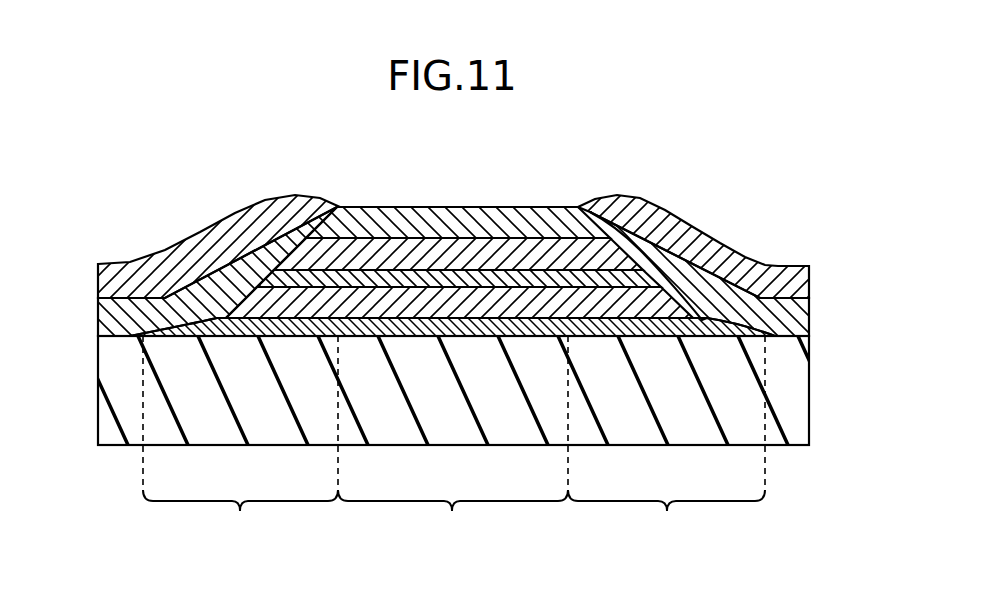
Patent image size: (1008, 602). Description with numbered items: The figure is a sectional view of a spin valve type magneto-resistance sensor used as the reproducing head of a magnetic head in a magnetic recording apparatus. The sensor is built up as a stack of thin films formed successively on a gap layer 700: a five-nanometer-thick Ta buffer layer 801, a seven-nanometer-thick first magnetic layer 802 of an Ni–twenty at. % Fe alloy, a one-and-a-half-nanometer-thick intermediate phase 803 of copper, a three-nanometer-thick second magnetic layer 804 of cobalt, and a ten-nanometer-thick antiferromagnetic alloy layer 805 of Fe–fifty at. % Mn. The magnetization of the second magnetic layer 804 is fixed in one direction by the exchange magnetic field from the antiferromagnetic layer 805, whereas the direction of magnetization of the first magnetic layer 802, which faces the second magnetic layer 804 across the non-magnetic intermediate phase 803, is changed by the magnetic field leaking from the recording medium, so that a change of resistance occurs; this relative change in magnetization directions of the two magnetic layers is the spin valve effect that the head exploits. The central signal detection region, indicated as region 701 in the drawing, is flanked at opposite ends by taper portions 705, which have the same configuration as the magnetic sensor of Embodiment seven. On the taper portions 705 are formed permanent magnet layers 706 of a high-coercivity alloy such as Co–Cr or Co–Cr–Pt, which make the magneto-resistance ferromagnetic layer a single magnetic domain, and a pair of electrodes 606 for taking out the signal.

The gap layer 700 is at (808, 381).
The channel forming region 701 is at (453, 520).
The taper portions 705 is at (454, 443).
The permanent magnet layers 706 is at (158, 301).
The electrodes 606 is at (237, 223).
The Ta buffer layer 801 is at (555, 334).
The first magnetic layer 802 is at (508, 292).
The intermediate phase 803 is at (457, 275).
The second magnetic layer 804 is at (402, 250).
The antiferromagnetic alloy layer 805 is at (353, 215).